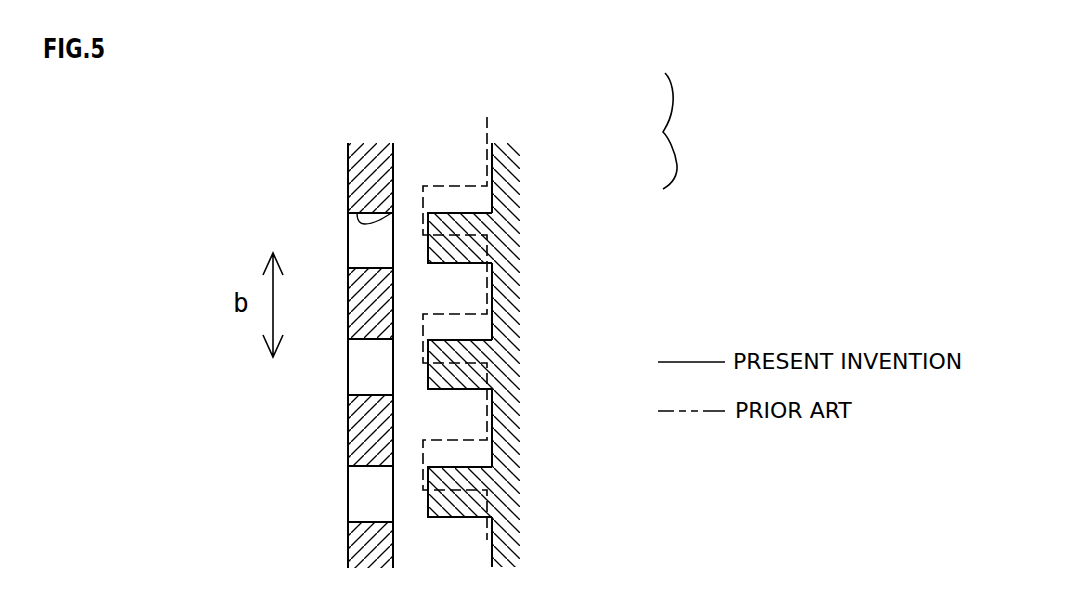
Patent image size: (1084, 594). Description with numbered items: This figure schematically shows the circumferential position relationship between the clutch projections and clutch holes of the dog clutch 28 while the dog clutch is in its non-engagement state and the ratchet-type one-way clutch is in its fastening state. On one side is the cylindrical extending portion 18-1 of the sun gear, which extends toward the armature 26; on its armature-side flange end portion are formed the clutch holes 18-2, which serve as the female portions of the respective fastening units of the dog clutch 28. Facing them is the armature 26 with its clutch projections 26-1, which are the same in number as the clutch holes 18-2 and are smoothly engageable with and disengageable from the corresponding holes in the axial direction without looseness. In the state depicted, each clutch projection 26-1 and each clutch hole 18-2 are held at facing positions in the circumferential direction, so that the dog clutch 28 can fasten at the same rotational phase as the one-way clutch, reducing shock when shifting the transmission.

The cylindrical extending portion 18-1 is at (363, 176).
The clutch holes 18-2 is at (393, 212).
The armature 26 is at (518, 244).
The clutch projections 26-1 is at (462, 254).
The dog clutch 28 is at (712, 132).